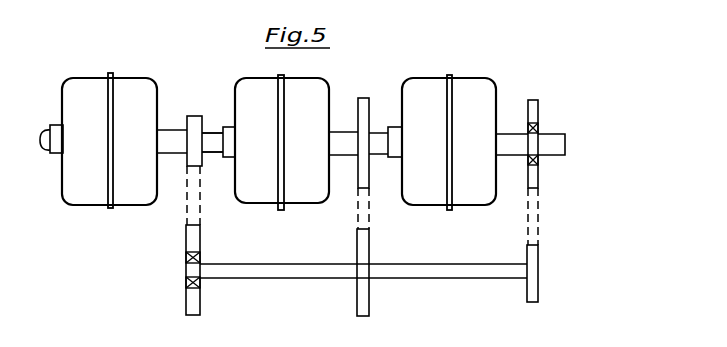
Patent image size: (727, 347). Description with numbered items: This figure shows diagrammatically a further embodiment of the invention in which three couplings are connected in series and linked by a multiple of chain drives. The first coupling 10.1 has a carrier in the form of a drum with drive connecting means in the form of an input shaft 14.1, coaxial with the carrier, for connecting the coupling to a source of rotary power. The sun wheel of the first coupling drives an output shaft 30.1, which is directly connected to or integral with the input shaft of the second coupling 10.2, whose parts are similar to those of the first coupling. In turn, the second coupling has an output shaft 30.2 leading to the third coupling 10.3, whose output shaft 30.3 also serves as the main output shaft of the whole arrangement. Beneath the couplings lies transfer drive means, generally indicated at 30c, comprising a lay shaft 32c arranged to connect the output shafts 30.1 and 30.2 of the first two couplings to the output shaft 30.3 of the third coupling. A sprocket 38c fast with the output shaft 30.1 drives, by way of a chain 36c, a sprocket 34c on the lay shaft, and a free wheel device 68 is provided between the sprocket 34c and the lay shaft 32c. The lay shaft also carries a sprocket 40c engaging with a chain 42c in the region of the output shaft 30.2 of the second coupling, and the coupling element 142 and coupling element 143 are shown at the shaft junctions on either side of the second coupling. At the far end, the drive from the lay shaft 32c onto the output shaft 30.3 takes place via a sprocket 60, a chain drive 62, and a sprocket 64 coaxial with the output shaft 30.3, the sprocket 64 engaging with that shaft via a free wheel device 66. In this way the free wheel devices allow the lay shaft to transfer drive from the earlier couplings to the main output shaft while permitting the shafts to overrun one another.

The input shaft 14.1 is at (57, 127).
The first coupling 10.1 is at (143, 77).
The output shaft 30.1 is at (172, 128).
The sprocket 38c is at (204, 120).
The coupling 142 is at (212, 145).
The chain 36c is at (200, 225).
The sprocket 34c is at (195, 236).
The free wheel device 68 is at (187, 283).
The lay shaft 32c is at (282, 275).
The transfer drive means 30c is at (450, 273).
The second coupling 10.2 is at (326, 78).
The output shaft 30.2 is at (340, 130).
The coupling 143 is at (378, 133).
The chain 42c is at (374, 213).
The sprocket 40c is at (367, 258).
The coupling 10.3 is at (501, 88).
The output shaft 30.3 is at (552, 133).
The sprocket 64 is at (537, 105).
The free wheel device 66 is at (540, 160).
The chain drive 62 is at (538, 232).
The sprocket 60 is at (533, 291).